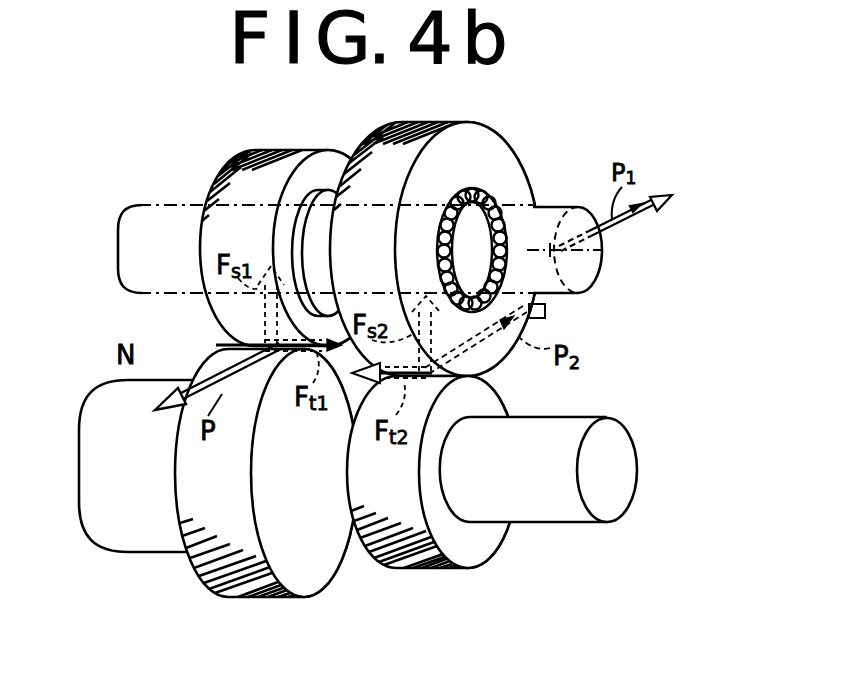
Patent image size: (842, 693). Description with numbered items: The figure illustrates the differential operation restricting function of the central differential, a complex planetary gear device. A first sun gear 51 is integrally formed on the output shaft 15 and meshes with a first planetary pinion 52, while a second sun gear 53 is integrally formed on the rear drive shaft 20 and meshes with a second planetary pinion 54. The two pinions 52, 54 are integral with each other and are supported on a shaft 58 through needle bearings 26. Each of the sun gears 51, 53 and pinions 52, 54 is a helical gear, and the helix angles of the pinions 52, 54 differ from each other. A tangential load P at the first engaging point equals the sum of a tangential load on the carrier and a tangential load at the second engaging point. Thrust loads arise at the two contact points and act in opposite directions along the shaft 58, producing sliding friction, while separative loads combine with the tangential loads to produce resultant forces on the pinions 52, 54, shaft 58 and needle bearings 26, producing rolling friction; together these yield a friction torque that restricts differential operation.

The output shaft 15 is at (114, 538).
The rear drive shaft 20 is at (617, 507).
The needle bearings 26 is at (476, 194).
The first sun gear 51 is at (263, 587).
The first planetary pinion 52 is at (271, 151).
The second sun gear 53 is at (424, 560).
The second planetary pinion 54 is at (480, 138).
The shaft 58 is at (590, 276).